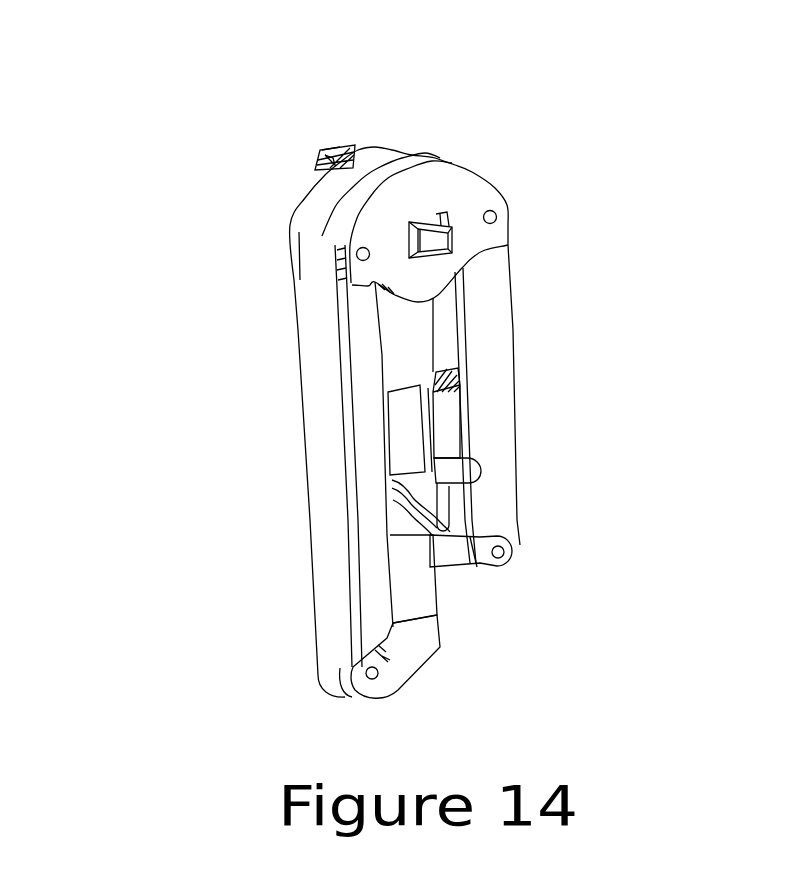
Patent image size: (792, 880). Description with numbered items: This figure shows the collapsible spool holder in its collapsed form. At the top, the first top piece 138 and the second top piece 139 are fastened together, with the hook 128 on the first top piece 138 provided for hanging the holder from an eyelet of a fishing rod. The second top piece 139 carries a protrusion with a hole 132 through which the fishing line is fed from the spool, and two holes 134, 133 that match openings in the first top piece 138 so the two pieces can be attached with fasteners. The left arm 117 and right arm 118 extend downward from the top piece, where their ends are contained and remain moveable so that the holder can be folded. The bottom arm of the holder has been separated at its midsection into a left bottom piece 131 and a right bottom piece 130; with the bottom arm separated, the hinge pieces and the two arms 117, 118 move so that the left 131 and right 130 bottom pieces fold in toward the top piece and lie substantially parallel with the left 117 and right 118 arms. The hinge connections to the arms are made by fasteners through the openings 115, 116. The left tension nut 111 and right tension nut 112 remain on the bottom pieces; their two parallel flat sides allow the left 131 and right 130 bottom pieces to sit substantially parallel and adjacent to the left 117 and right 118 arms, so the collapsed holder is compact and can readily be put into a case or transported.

The left tension nut 111 is at (407, 518).
The right tension nut 112 is at (481, 483).
The opening in left hinge piece 115 is at (366, 677).
The opening in right hinge piece 116 is at (504, 553).
The left arm 117 is at (325, 362).
The right arm 118 is at (478, 333).
The hook 128 is at (300, 158).
The right bottom piece 130 is at (447, 426).
The left bottom piece 131 is at (405, 427).
The protrusion with a hole 132 is at (445, 243).
The hole 133 is at (356, 256).
The hole 134 is at (497, 215).
The first top piece 138 is at (368, 160).
The second top piece 139 is at (407, 165).